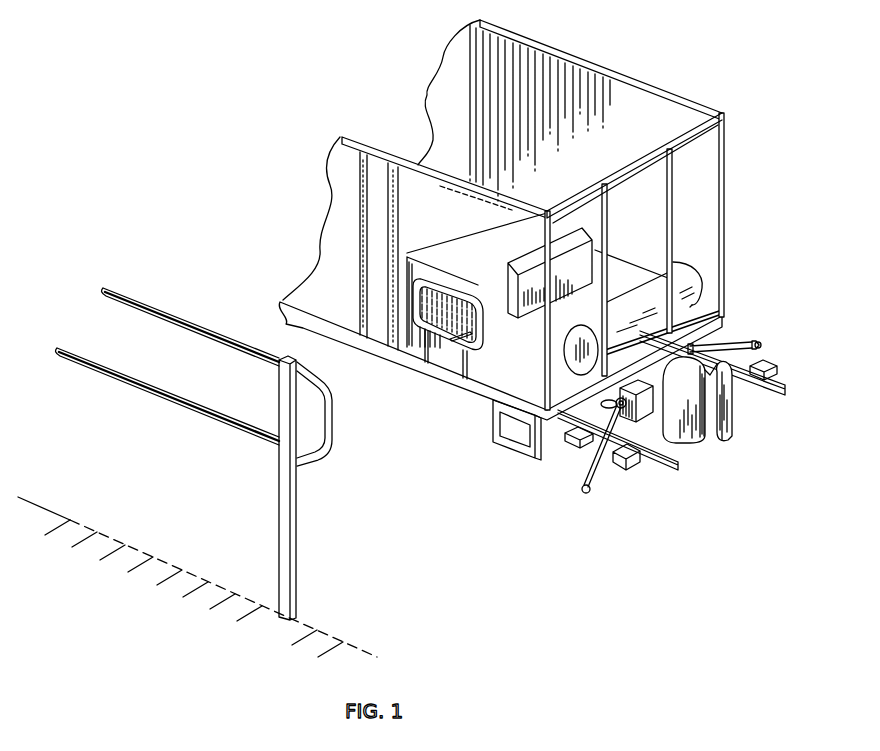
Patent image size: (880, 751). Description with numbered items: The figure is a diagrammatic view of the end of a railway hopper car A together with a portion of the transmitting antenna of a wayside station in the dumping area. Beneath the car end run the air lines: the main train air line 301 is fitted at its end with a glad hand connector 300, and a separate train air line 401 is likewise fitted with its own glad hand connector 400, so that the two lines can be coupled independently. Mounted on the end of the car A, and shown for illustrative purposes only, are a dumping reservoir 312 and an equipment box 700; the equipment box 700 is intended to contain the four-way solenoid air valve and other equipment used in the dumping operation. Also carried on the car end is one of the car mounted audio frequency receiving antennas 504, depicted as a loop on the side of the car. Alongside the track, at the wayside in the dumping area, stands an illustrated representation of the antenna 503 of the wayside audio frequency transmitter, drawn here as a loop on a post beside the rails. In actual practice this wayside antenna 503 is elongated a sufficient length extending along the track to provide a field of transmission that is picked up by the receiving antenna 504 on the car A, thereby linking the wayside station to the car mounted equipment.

The hopper car A is at (360, 203).
The equipment box 700 is at (533, 257).
The dumping reservoir 312 is at (692, 274).
The car mounted audio frequency receiving antenna 504 is at (485, 343).
The antenna of the wayside audio frequency transmitter 503 is at (332, 441).
The separate train air line 401 is at (728, 343).
The glad hand connector 400 is at (762, 343).
The glad hand connector 300 is at (581, 488).
The main train air line 301 is at (598, 470).